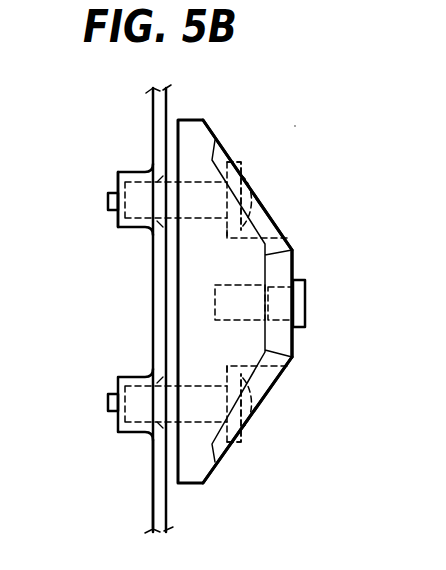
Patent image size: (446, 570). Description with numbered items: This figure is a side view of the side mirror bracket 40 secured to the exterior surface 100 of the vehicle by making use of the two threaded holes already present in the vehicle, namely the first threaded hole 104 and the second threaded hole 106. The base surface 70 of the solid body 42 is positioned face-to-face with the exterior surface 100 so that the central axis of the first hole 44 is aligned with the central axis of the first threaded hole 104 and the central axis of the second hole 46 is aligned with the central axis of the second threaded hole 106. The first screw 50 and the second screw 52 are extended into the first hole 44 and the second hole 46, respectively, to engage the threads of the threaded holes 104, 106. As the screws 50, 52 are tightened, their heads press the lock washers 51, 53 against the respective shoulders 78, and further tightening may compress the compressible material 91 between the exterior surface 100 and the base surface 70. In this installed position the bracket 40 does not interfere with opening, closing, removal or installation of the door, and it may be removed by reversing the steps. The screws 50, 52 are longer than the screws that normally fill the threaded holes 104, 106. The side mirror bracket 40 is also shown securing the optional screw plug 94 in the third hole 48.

The side mirror bracket 40 is at (298, 123).
The solid body 42 is at (239, 351).
The first hole 44 is at (277, 416).
The second hole 46 is at (303, 182).
The third hole 48 is at (313, 266).
The first screw 50 is at (255, 418).
The lock washer 51 is at (236, 445).
The second screw 52 is at (250, 186).
The lock washer 53 is at (236, 158).
The base surface 70 is at (166, 246).
The shoulders 78 is at (227, 233).
The compressible material 91 is at (172, 465).
The screw plug 94 is at (306, 295).
The exterior surface 100 is at (166, 104).
The first threaded hole 104 is at (117, 423).
The second threaded hole 106 is at (117, 175).